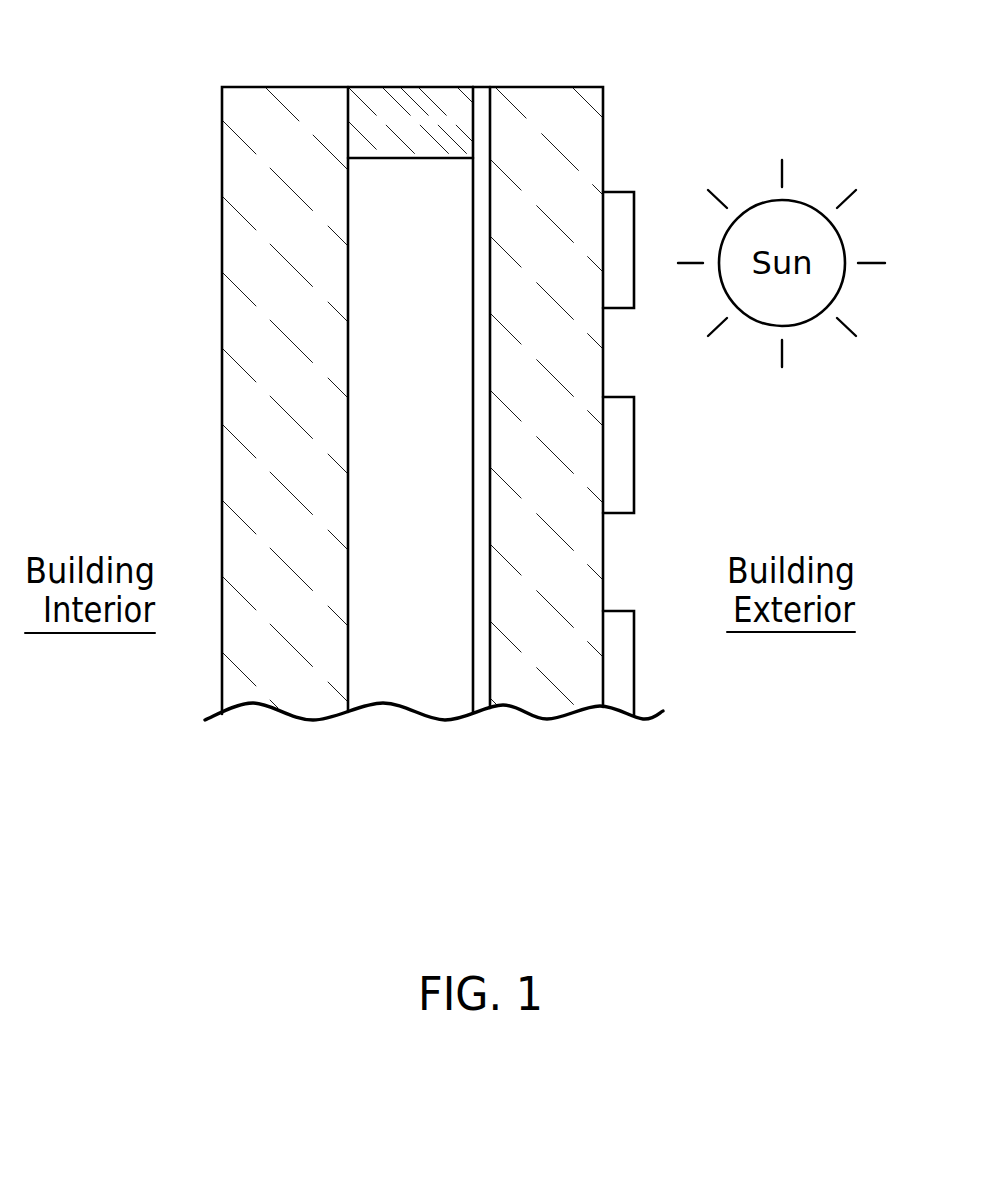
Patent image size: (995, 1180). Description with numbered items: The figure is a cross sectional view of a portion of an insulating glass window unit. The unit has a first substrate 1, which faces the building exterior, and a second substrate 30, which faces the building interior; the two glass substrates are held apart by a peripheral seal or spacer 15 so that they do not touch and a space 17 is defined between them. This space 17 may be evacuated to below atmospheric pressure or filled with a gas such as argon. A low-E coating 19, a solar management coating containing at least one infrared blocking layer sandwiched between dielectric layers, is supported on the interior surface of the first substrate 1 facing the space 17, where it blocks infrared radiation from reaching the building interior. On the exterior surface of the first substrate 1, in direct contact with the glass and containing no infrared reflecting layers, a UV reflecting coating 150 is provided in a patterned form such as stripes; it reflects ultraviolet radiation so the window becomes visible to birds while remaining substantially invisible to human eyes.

The first substrate 1 is at (548, 130).
The spacer 15 is at (427, 128).
The space 17 is at (422, 300).
The low-E coating 19 is at (480, 169).
The second substrate 30 is at (287, 130).
The UV reflecting coating 150 is at (618, 298).